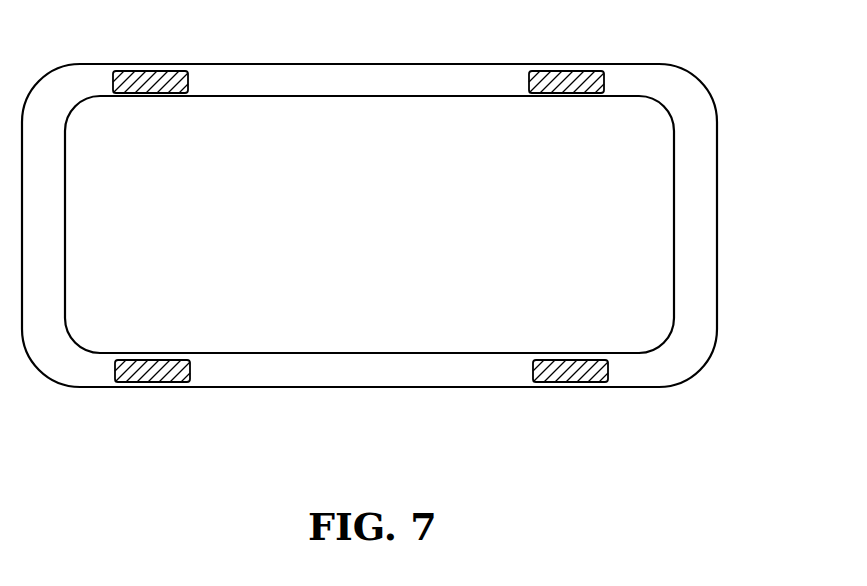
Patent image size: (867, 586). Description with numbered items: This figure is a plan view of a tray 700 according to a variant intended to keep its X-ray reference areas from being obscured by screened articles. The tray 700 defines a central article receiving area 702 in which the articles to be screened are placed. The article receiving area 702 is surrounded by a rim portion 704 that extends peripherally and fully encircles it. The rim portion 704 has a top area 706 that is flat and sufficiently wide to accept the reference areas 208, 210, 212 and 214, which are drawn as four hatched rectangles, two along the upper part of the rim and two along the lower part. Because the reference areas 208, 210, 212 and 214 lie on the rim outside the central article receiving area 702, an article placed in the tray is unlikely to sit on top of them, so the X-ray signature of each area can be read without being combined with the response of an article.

The tray 700 is at (717, 186).
The central article receiving area 702 is at (384, 243).
The rim portion 704 is at (674, 240).
The top area 706 is at (383, 93).
The reference area 208 is at (152, 85).
The reference area 210 is at (155, 374).
The reference area 212 is at (568, 85).
The reference area 214 is at (572, 373).